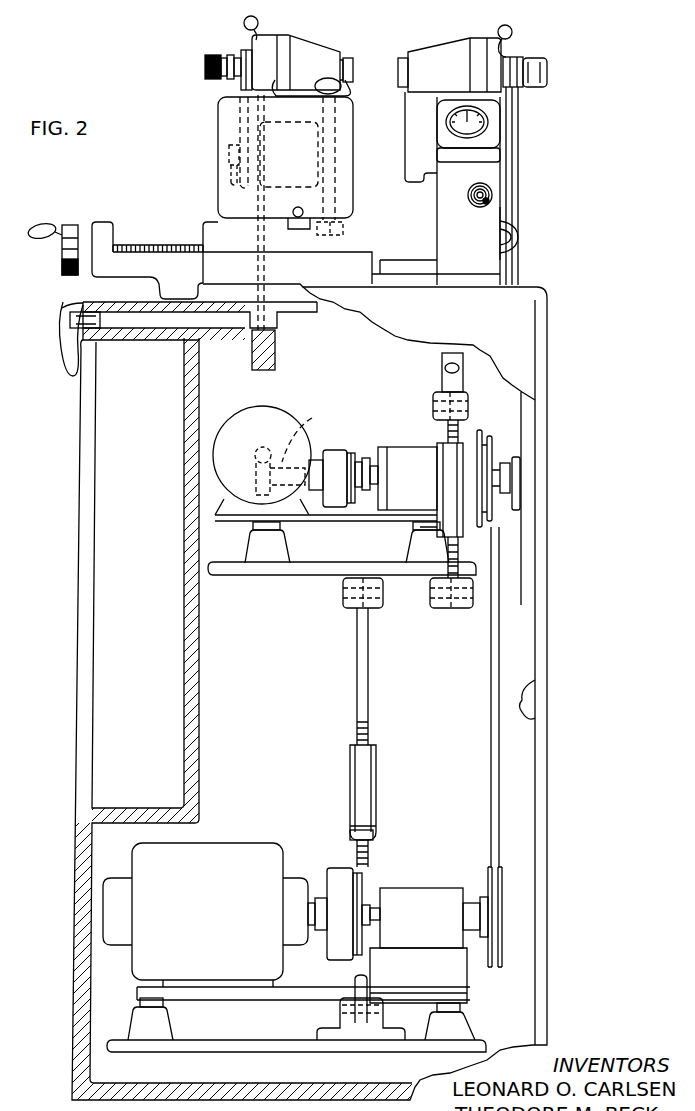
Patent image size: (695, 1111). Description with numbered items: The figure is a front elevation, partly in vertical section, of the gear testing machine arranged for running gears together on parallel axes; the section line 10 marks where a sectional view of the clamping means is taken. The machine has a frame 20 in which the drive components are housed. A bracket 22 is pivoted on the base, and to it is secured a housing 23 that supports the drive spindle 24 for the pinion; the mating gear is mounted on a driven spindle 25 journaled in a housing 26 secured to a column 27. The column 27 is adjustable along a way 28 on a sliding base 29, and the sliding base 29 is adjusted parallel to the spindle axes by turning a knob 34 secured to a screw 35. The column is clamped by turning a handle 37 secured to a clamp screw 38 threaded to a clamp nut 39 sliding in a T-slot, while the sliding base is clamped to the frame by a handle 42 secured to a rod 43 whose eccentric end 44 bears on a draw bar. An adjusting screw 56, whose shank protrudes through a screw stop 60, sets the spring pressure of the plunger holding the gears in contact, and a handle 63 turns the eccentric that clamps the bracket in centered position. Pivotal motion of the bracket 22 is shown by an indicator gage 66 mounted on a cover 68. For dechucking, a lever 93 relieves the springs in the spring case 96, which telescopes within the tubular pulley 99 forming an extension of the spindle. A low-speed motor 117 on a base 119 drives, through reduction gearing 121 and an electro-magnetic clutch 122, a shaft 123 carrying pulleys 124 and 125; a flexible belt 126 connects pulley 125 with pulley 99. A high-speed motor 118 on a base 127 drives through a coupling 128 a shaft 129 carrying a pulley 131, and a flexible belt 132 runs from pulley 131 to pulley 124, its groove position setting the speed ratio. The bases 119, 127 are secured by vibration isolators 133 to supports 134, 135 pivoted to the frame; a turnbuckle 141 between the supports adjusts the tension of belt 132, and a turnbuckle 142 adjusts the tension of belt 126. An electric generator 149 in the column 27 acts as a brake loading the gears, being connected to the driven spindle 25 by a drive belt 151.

The section line 10 is at (270, 208).
The frame 20 is at (186, 553).
The bracket 22 is at (412, 112).
The housing 23 is at (443, 52).
The drive spindle 24 is at (402, 58).
The driven spindle 25 is at (351, 60).
The housing 26 is at (310, 55).
The column 27 is at (222, 122).
The way 28 is at (295, 226).
The sliding base 29 is at (405, 249).
The knob 34 is at (62, 250).
The screw 35 is at (150, 247).
The handle 37 is at (342, 92).
The clamp screw 38 is at (338, 153).
The clamp nut 39 is at (340, 225).
The handle 42 is at (68, 345).
The rod 43 is at (148, 320).
The eccentric end 44 is at (276, 322).
The adjusting screw 56 is at (492, 183).
The screw stop 60 is at (489, 201).
The handle 63 is at (516, 234).
The indicator gage 66 is at (488, 122).
The cover 68 is at (490, 157).
The lever 93 is at (246, 31).
The spring case 96 is at (541, 68).
The tubular pulley 99 is at (521, 52).
The low-speed motor 117 is at (274, 422).
The high-speed motor 118 is at (218, 924).
The base 119 is at (222, 520).
The reduction gearing 121 is at (308, 430).
The electro-magnetic clutch 122 is at (333, 450).
The shaft 123 is at (385, 447).
The pulley 124 is at (494, 447).
The pulley 125 is at (516, 478).
The flexible belt 126 is at (508, 271).
The base 127 is at (293, 1000).
The coupling 128 is at (333, 878).
The shaft 129 is at (381, 912).
The pulley 131 is at (501, 937).
The flexible belt 132 is at (498, 795).
The vibration isolators 133 is at (434, 529).
The support 134 is at (268, 568).
The support 135 is at (289, 1048).
The turnbuckle 141 is at (369, 780).
The turnbuckle 142 is at (452, 521).
The electric generator 149 is at (228, 172).
The drive belt 151 is at (238, 89).